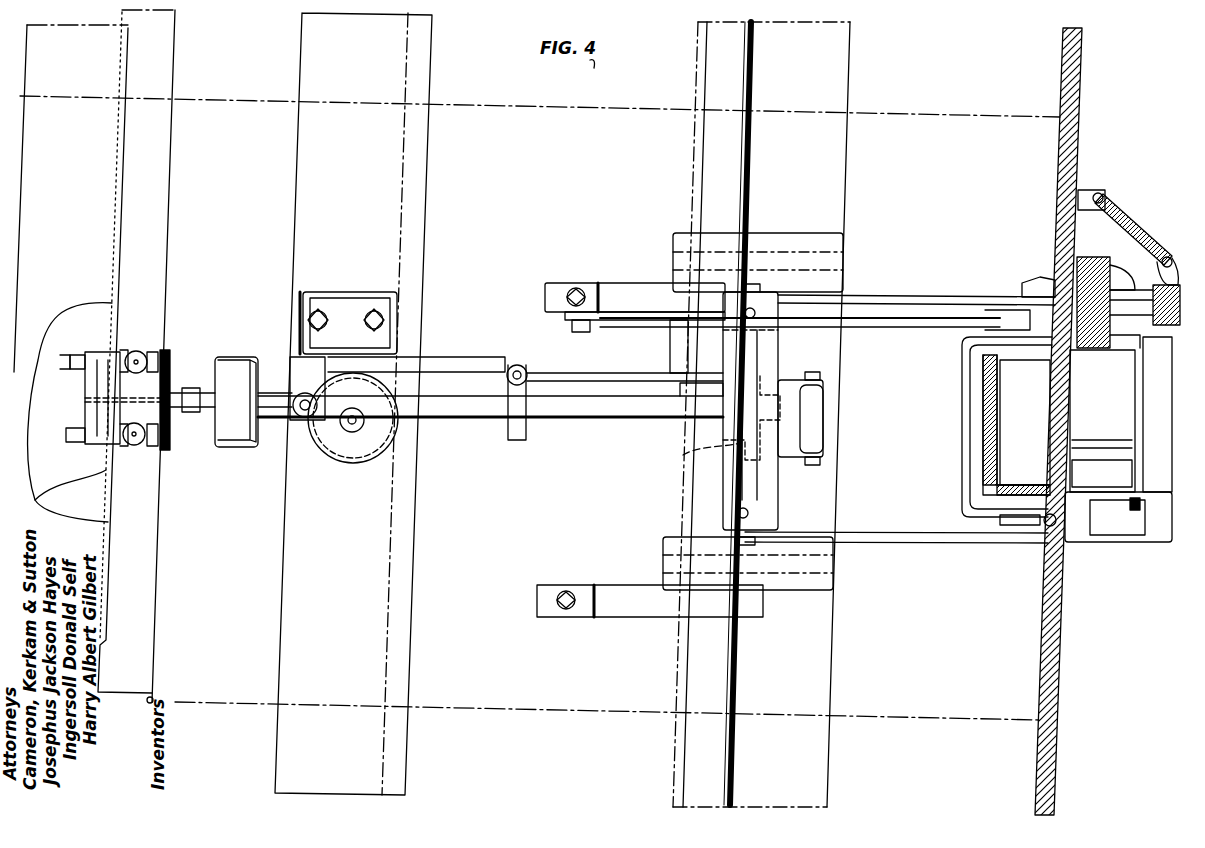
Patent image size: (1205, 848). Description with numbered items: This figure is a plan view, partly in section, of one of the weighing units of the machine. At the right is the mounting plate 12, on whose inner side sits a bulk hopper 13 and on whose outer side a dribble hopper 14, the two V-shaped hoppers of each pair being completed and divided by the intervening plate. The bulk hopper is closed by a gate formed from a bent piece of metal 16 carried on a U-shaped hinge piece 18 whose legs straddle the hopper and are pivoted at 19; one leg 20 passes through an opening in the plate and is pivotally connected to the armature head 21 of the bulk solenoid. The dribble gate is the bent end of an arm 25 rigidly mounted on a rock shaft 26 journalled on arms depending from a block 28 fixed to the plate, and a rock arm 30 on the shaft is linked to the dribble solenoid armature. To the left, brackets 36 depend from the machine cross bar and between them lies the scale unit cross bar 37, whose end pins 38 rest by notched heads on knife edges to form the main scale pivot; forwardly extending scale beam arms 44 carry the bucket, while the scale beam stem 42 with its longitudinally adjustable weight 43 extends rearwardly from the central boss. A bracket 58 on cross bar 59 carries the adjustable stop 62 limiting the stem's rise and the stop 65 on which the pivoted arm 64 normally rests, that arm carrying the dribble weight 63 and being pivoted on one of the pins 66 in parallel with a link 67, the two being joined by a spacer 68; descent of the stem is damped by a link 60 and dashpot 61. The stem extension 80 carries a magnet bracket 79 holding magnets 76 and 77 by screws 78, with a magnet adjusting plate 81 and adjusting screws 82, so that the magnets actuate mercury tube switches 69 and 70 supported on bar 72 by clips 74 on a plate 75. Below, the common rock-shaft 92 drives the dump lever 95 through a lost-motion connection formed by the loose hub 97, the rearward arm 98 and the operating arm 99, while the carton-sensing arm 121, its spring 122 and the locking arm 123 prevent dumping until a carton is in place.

The mounting plate 12 is at (1052, 644).
The bulk hopper 13 is at (1010, 448).
The dribble hopper 14 is at (1088, 456).
The bulk gate metal piece 16 is at (968, 407).
The U-shaped hinge piece 18 is at (962, 466).
The pivot 19 is at (1010, 520).
The hinge leg 20 is at (1080, 520).
The armature head 21 is at (1132, 520).
The dribble gate arm 25 is at (1172, 370).
The rock shaft 26 is at (1090, 425).
The block 28 is at (1080, 262).
The rock arm 30 is at (1180, 285).
The bracket 36 is at (690, 256).
The cross bar 37 is at (750, 482).
The pin 38 is at (749, 513).
The scale beam stem 42 is at (610, 418).
The longitudinally adjustable weight 43 is at (232, 370).
The scale beam arm 44 is at (915, 298).
The bracket 58 is at (346, 300).
The cross bar 59 is at (420, 252).
The link 60 is at (352, 432).
The dashpot 61 is at (338, 446).
The adjustable stop 62 is at (298, 415).
The dribble weight 63 is at (516, 440).
The pivotally mounted arm 64 is at (600, 380).
The adjustable stop 65 is at (515, 362).
The pivot pin 66 is at (728, 364).
The link 67 is at (822, 445).
The spacer 68 is at (822, 417).
The mercury tube switch 69 is at (128, 350).
The mercury tube switch 70 is at (148, 446).
The supporting bar 72 is at (168, 542).
The clip 74 is at (146, 345).
The plate 75 is at (170, 440).
The magnet 76 is at (105, 335).
The magnet 77 is at (98, 455).
The screw 78 is at (125, 345).
The magnet bracket 79 is at (95, 385).
The scale beam stem extension 80 is at (86, 399).
The magnet adjusting plate 81 is at (72, 362).
The adjusting screw 82 is at (82, 354).
The rock-shaft 92 is at (735, 692).
The dump lever 95 is at (878, 322).
The hub 97 is at (672, 345).
The arm 98 is at (632, 318).
The operating arm 99 is at (650, 296).
The arm 121 is at (1135, 250).
The spring 122 is at (1104, 198).
The arm 123 is at (1040, 280).